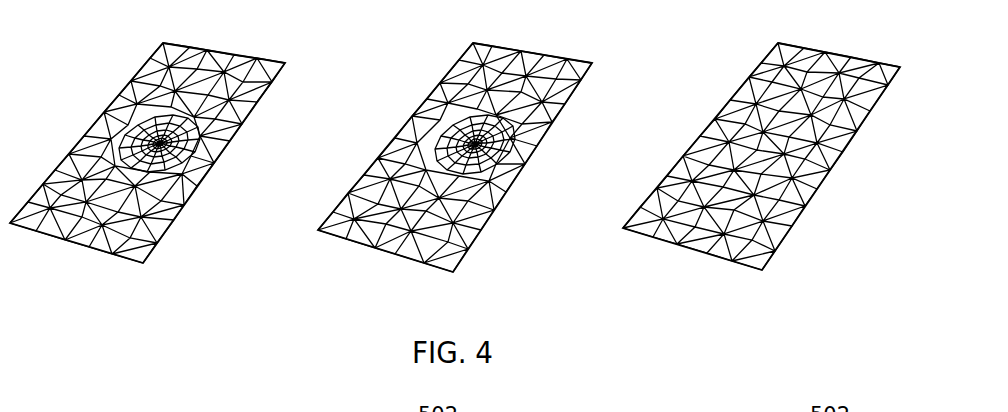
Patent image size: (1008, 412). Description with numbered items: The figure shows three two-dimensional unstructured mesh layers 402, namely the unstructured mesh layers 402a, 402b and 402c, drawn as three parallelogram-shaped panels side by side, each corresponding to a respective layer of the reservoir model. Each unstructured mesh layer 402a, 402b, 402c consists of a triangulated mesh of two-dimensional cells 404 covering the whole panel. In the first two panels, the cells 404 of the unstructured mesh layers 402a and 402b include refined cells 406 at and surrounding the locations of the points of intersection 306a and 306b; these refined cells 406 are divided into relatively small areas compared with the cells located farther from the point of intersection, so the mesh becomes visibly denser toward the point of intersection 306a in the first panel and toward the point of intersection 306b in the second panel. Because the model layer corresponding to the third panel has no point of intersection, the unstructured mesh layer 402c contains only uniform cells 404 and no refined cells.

The unstructured mesh layers 402 is at (455, 136).
The unstructured mesh layer 402a is at (269, 47).
The unstructured mesh layer 402b is at (541, 40).
The unstructured mesh layer 402c is at (819, 35).
The 2D cells 404 is at (179, 239).
The refined 2D cells 406 is at (188, 143).
The point of intersection 306a is at (164, 146).
The point of intersection 306b is at (474, 150).